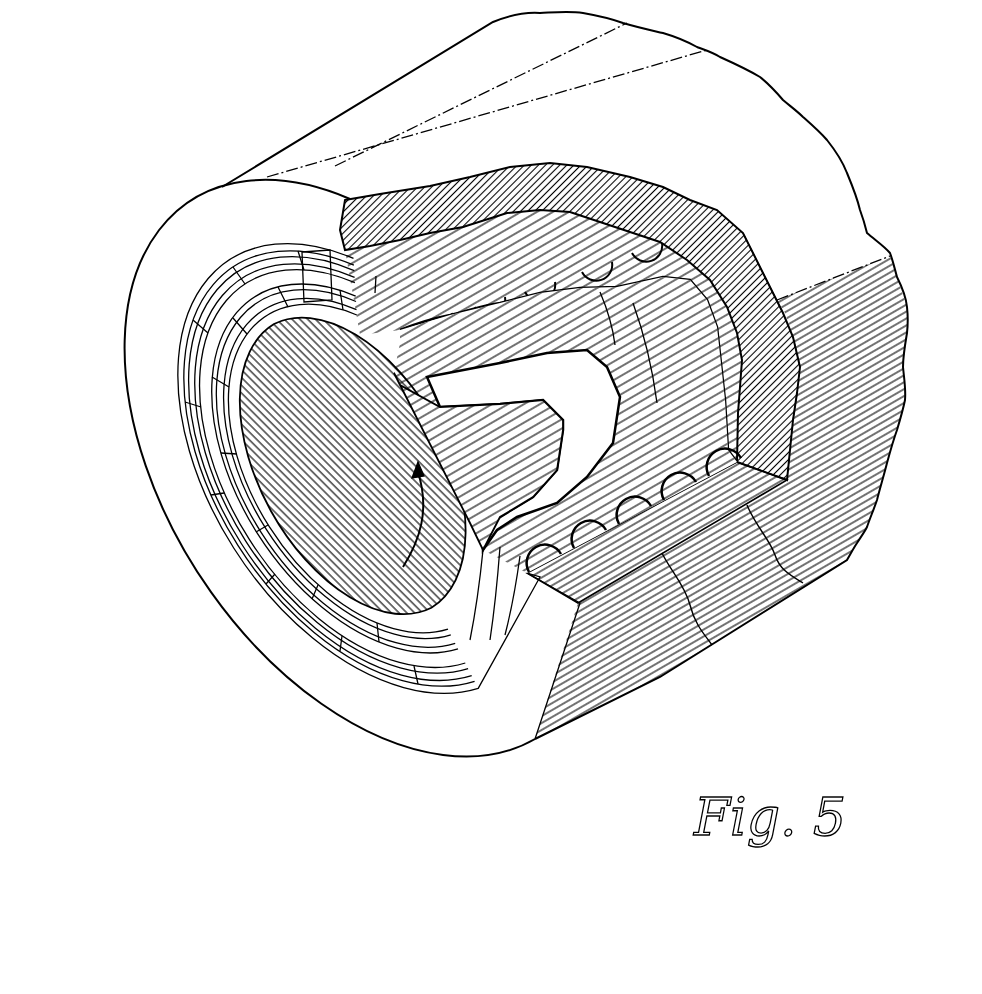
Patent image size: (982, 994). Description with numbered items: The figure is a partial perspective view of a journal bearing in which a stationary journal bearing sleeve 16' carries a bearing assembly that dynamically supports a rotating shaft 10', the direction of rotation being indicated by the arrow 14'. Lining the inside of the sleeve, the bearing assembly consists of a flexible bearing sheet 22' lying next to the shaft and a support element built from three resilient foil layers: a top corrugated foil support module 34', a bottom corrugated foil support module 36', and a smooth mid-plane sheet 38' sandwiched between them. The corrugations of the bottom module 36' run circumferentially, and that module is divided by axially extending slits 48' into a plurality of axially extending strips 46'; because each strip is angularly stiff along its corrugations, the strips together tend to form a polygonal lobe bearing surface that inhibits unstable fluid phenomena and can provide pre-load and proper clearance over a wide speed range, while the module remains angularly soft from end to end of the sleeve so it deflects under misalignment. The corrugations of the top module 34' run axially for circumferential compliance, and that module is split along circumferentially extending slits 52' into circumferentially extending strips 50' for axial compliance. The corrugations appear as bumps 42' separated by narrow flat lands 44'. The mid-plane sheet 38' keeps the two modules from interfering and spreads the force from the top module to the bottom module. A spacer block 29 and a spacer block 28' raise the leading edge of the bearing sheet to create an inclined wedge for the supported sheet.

The rotating shaft 10' is at (401, 466).
The direction arrow 14' is at (394, 517).
The journal bearing sleeve 16' is at (545, 384).
The bearing sheet 22' is at (457, 468).
The inner sheath 28' is at (337, 463).
The spacer block 29 is at (317, 257).
The top corrugated foil support module 34' is at (782, 402).
The bottom corrugated foil support module 36' is at (488, 223).
The mid-plane sheet 38' is at (463, 432).
The bumps 42' is at (609, 384).
The lands 44' is at (570, 409).
The axially extending strips 46' is at (557, 298).
The axially extending slits 48' is at (606, 198).
The circumferentially extending strips 50' is at (794, 341).
The circumferentially extending slits 52' is at (791, 273).